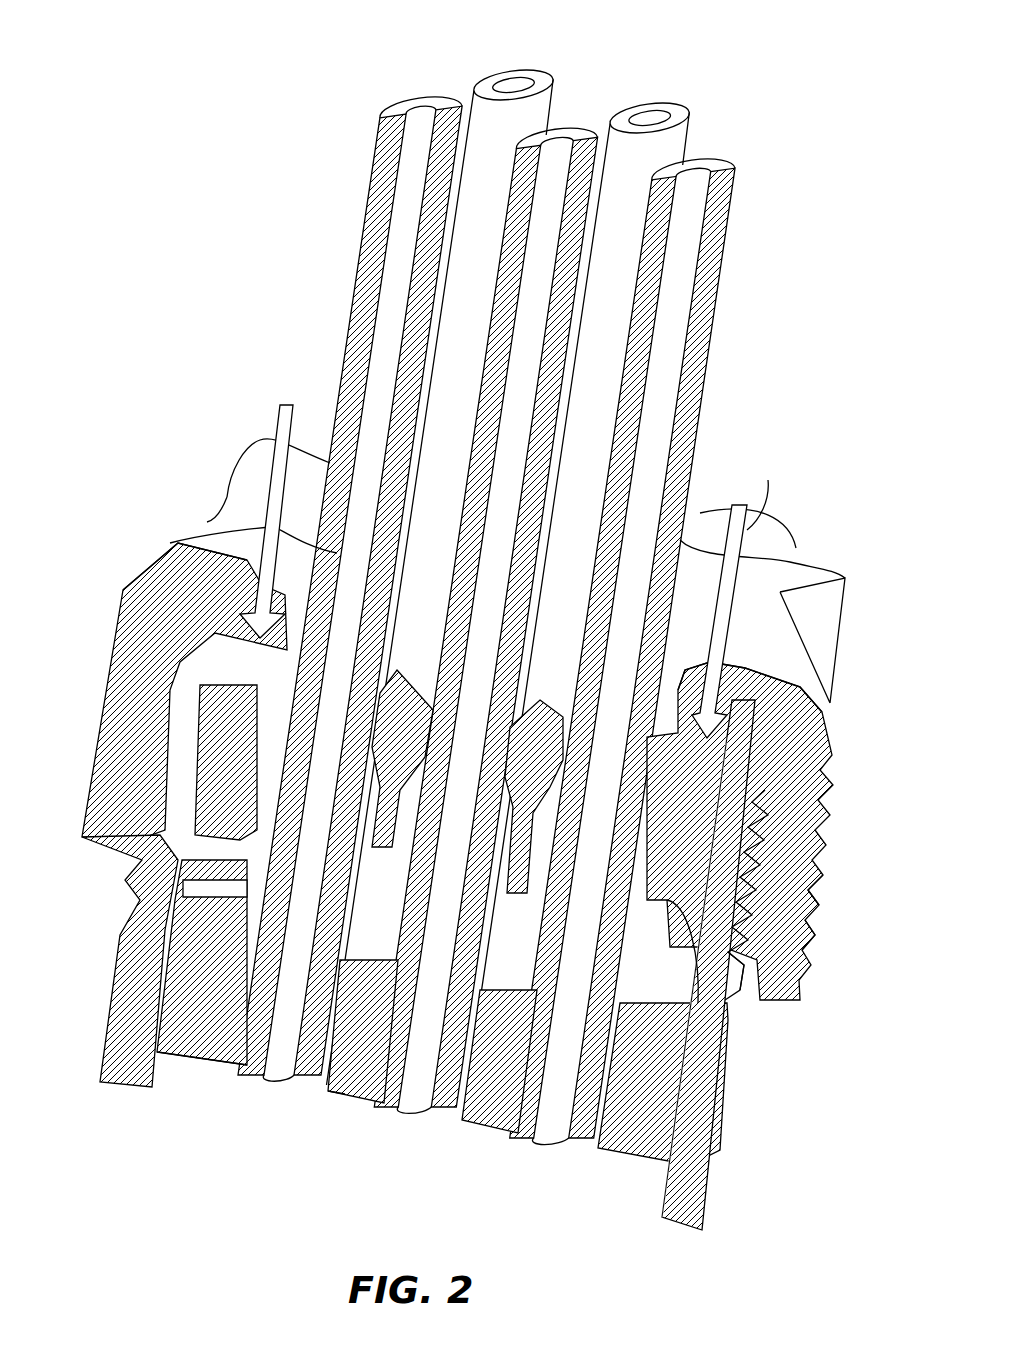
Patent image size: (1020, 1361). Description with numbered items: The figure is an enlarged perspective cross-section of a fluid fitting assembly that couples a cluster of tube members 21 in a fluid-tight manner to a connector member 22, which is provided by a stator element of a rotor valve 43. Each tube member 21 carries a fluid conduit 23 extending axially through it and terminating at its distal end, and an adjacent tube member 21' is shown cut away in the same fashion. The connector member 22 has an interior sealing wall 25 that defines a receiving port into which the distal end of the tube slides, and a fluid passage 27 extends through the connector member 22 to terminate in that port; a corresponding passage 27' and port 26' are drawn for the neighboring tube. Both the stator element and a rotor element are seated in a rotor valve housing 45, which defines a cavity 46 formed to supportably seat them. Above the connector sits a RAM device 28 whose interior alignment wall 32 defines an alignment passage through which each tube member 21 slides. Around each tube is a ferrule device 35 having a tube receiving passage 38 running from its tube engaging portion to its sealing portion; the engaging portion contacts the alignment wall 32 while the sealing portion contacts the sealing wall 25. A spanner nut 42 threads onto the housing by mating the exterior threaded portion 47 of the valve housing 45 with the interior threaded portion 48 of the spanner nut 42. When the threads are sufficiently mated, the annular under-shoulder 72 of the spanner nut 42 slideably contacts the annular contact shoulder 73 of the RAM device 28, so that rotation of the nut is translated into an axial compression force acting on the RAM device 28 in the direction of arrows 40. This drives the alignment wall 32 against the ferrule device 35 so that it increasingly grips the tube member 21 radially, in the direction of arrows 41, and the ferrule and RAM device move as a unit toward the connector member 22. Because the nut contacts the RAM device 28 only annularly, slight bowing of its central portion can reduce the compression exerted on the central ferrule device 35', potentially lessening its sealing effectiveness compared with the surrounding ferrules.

The fluid conduit 23 is at (418, 116).
The second tube 21' is at (485, 568).
The tube end 27' is at (410, 1152).
The fluid passage 27 is at (622, 693).
The arrows 41 is at (407, 805).
The spanner nut 42 is at (108, 648).
The annular under-shoulder 72 is at (182, 562).
The interior sealing wall 25 is at (247, 934).
The ferrule device 35 is at (142, 959).
The tube member 21 is at (202, 1118).
The passage 26' is at (363, 1083).
The central ferrule device 35' is at (314, 1116).
The connector member 22 is at (468, 1133).
The rotor valve housing 45 is at (719, 1124).
The interior alignment wall 32 is at (640, 778).
The annular contact shoulder 73 is at (728, 736).
The rotor valve 43 is at (712, 1192).
The RAM device 28 is at (712, 843).
The exterior threaded portion 47 is at (742, 912).
The interior threaded portion 48 is at (732, 953).
The cavity 46 is at (702, 988).
The tube receiving passage 38 is at (722, 1004).
The arrows 40 is at (243, 566).